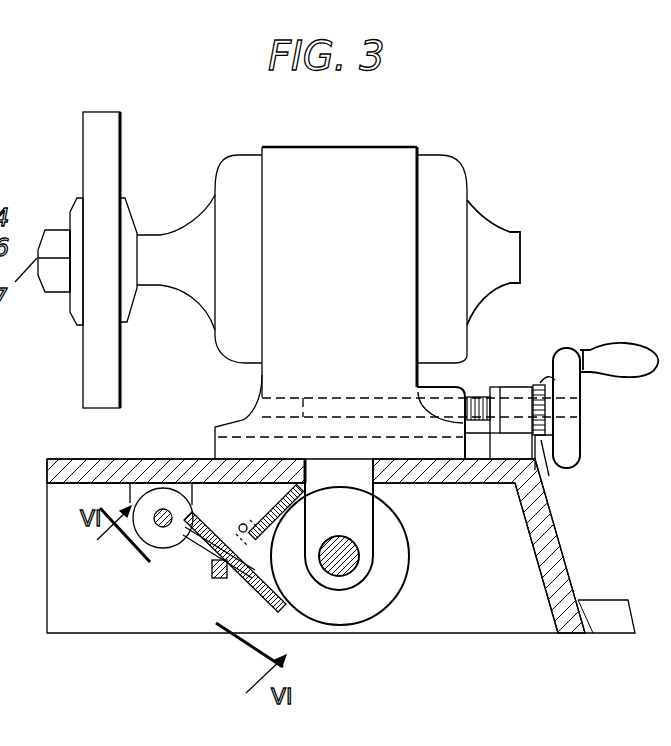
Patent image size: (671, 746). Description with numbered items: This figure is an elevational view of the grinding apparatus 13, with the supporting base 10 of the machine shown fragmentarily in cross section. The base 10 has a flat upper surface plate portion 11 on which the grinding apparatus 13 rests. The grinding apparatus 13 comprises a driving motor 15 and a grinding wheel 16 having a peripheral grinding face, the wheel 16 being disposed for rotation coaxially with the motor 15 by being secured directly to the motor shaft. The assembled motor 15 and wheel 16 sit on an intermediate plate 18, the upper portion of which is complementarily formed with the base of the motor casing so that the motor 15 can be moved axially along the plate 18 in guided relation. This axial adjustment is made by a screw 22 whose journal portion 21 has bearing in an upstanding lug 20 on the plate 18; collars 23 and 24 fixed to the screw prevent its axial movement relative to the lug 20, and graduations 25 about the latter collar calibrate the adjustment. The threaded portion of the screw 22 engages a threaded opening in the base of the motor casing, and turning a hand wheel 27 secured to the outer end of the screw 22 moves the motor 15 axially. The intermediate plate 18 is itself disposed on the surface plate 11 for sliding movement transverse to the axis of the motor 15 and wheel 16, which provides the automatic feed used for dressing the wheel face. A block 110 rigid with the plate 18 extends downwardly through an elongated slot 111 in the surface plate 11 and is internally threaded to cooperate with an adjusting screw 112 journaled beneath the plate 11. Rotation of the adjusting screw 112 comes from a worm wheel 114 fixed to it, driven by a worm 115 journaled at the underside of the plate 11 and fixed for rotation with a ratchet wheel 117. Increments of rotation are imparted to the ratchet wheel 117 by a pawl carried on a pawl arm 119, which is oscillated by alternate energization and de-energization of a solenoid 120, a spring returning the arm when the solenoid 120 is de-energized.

The supporting base 10 is at (562, 548).
The surface plate portion 11 is at (58, 460).
The grinding apparatus 13 is at (298, 143).
The driving motor 15 is at (356, 160).
The grinding wheel 16 is at (107, 147).
The intermediate plate 18 is at (493, 450).
The upstanding lug 20 is at (518, 390).
The journal portion 21 is at (507, 395).
The screw 22 is at (472, 398).
The collar 23 is at (492, 390).
The collar 24 is at (553, 378).
The graduations 25 is at (270, 395).
The hand wheel 27 is at (603, 352).
The block 110 is at (350, 517).
The elongated slot 111 is at (372, 458).
The adjusting screw 112 is at (352, 552).
The worm wheel 114 is at (385, 575).
The worm 115 is at (283, 493).
The ratchet wheel 117 is at (260, 587).
The pawl arm 119 is at (197, 540).
The solenoid 120 is at (147, 525).